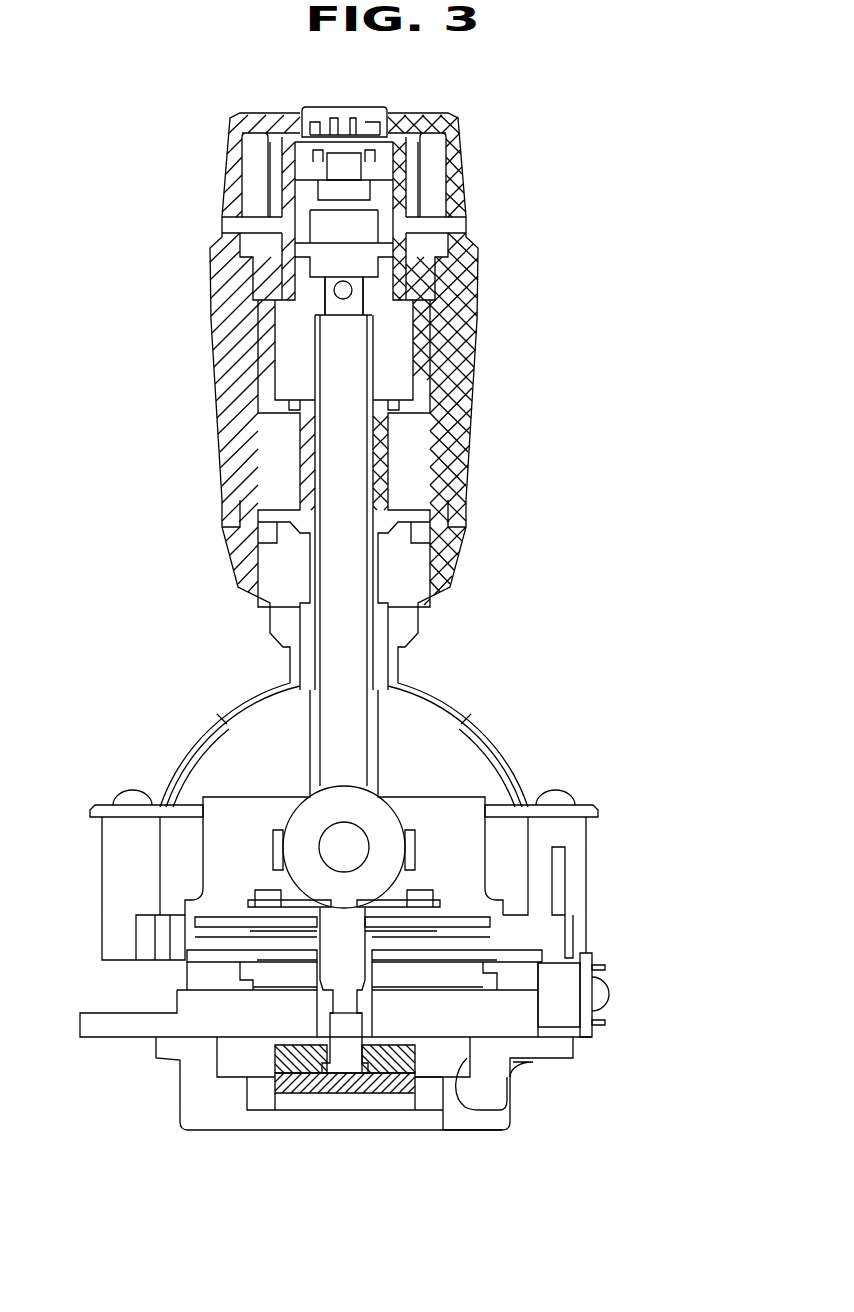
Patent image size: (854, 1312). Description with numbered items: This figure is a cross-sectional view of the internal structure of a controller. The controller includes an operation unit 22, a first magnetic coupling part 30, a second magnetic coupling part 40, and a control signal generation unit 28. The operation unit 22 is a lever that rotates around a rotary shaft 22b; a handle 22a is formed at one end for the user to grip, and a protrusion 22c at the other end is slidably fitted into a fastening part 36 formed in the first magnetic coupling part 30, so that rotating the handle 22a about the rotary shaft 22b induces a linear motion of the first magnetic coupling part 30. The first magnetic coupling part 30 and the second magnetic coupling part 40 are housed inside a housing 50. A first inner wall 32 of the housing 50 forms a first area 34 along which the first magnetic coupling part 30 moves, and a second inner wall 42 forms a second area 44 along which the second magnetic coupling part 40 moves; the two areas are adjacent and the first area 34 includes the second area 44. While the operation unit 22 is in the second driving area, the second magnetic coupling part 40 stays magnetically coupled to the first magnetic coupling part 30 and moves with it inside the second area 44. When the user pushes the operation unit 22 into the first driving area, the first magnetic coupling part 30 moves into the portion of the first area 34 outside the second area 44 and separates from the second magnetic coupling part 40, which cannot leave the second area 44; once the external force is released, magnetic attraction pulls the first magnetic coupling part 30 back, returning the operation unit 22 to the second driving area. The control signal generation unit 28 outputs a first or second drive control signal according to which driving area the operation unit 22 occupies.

The operation unit 22 is at (640, 602).
The handle 22a is at (442, 548).
The rotary shaft 22b is at (342, 850).
The protrusion 22c is at (343, 990).
The control signal generation unit 28 is at (590, 1000).
The first magnetic coupling part 30 is at (277, 1063).
The first inner wall 32 is at (497, 1107).
The first area 34 is at (438, 1063).
The fastening part 36 is at (353, 1007).
The second magnetic coupling part 40 is at (278, 1090).
The second inner wall 42 is at (435, 1110).
The second area 44 is at (368, 1103).
The housing 50 is at (500, 1088).